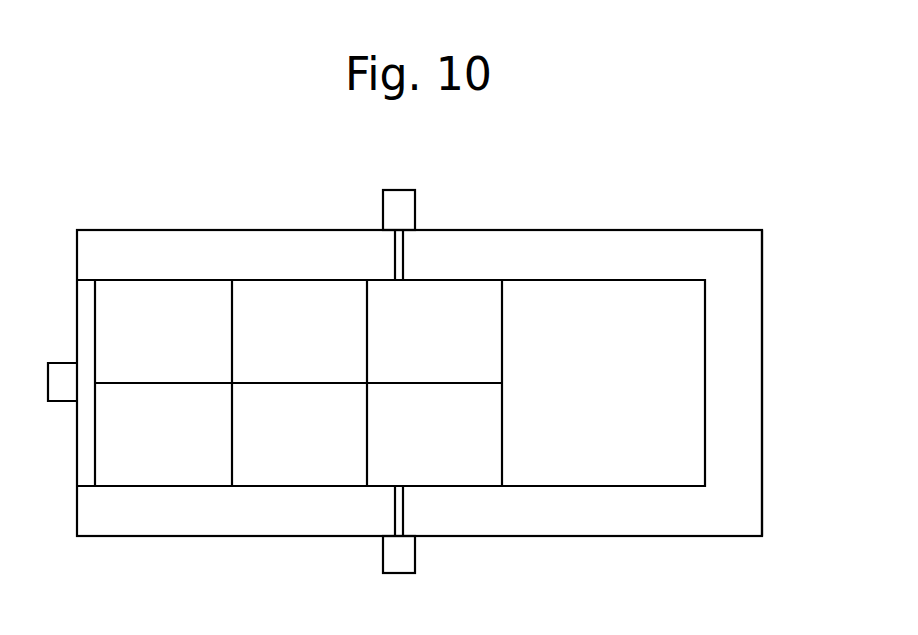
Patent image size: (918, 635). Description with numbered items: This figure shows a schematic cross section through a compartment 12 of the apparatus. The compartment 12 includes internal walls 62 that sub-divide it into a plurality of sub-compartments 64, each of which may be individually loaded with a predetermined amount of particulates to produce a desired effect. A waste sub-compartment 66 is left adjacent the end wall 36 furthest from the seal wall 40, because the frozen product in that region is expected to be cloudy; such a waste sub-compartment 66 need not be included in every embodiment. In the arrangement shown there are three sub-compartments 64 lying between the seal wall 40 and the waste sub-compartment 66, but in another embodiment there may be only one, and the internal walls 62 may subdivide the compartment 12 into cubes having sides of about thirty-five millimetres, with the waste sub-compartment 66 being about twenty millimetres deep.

The compartment 12 is at (692, 192).
The end wall 36 is at (740, 319).
The waste sub-compartment 66 is at (683, 411).
The sub-compartments 64 is at (163, 298).
The internal walls 62 is at (298, 383).
The seal wall 40 is at (86, 435).